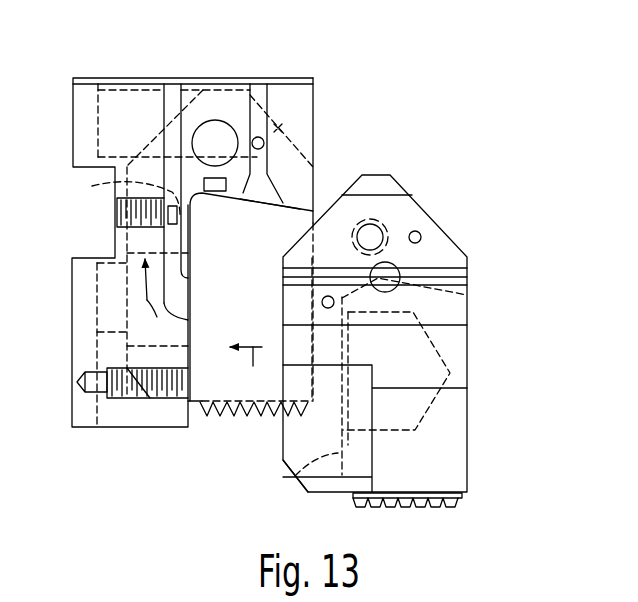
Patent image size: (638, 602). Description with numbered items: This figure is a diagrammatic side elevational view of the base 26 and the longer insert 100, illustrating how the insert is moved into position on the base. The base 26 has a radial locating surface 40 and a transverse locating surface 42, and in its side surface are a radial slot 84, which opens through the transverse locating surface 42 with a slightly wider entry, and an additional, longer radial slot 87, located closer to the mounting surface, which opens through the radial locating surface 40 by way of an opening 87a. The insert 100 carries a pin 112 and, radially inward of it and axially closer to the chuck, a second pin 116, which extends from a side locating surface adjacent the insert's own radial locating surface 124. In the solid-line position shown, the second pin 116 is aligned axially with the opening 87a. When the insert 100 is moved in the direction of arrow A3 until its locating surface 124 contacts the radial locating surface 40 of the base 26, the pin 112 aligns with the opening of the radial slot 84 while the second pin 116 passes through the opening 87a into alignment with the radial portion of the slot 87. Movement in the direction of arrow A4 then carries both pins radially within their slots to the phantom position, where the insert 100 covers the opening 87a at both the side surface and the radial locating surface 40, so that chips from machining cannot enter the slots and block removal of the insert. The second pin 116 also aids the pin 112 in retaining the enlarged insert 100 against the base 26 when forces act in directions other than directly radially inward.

The base 26 is at (323, 97).
The radial locating surface 40 is at (191, 242).
The transverse locating surface 42 is at (290, 206).
The radial slot 84 is at (263, 86).
The radial slot 87 is at (167, 106).
The opening 87a is at (178, 298).
The insert 100 is at (485, 272).
The pin 112 is at (315, 118).
The second pin 116 is at (115, 185).
The radial locating surface 124 is at (303, 470).
The arrow A3 is at (246, 370).
The arrow A4 is at (153, 302).